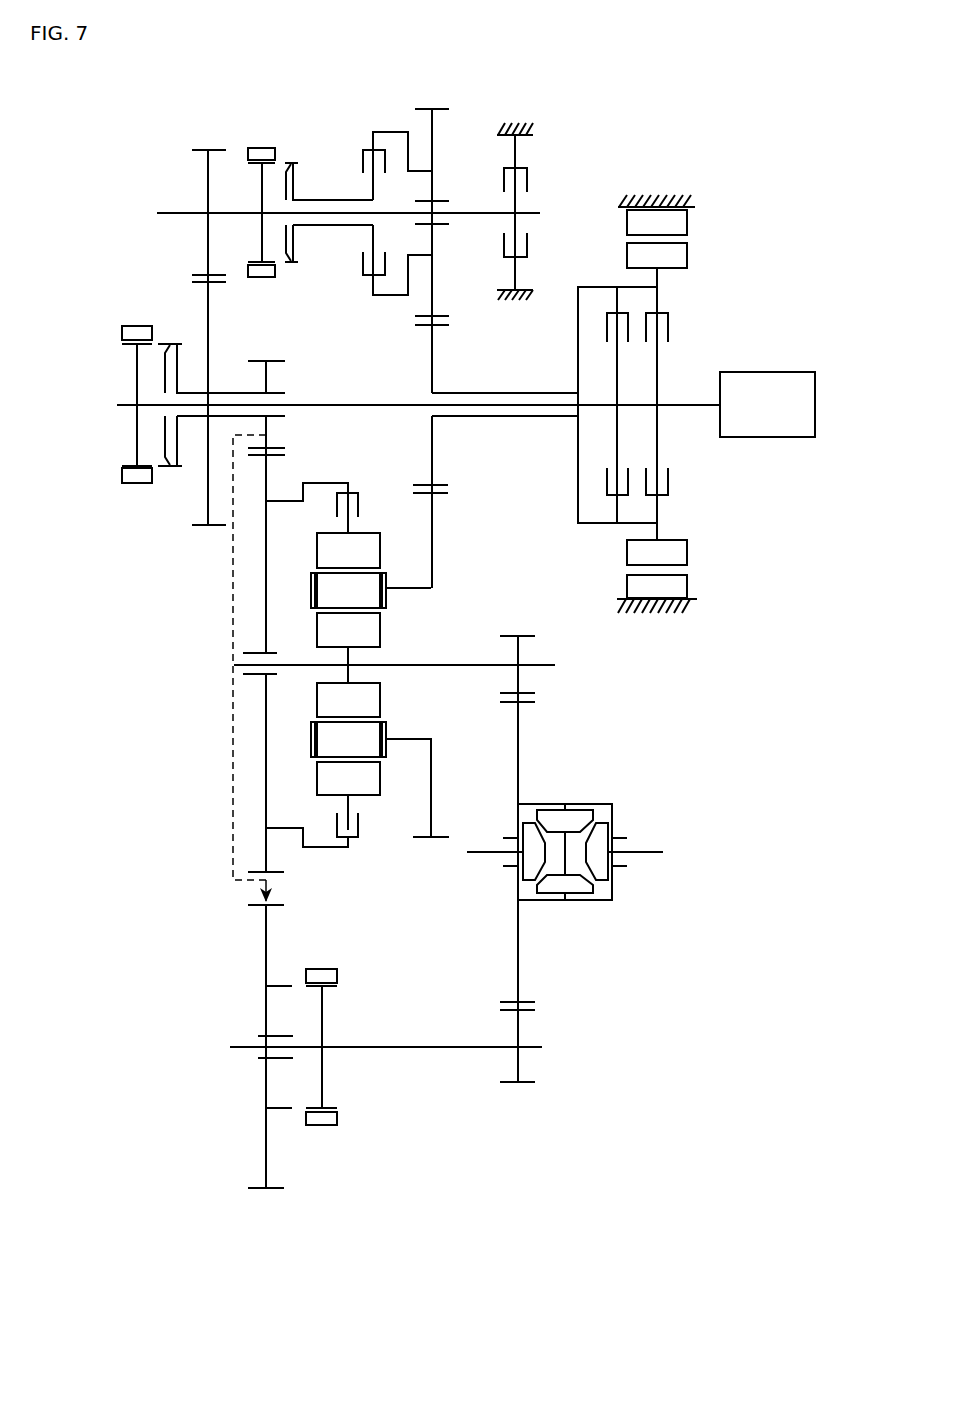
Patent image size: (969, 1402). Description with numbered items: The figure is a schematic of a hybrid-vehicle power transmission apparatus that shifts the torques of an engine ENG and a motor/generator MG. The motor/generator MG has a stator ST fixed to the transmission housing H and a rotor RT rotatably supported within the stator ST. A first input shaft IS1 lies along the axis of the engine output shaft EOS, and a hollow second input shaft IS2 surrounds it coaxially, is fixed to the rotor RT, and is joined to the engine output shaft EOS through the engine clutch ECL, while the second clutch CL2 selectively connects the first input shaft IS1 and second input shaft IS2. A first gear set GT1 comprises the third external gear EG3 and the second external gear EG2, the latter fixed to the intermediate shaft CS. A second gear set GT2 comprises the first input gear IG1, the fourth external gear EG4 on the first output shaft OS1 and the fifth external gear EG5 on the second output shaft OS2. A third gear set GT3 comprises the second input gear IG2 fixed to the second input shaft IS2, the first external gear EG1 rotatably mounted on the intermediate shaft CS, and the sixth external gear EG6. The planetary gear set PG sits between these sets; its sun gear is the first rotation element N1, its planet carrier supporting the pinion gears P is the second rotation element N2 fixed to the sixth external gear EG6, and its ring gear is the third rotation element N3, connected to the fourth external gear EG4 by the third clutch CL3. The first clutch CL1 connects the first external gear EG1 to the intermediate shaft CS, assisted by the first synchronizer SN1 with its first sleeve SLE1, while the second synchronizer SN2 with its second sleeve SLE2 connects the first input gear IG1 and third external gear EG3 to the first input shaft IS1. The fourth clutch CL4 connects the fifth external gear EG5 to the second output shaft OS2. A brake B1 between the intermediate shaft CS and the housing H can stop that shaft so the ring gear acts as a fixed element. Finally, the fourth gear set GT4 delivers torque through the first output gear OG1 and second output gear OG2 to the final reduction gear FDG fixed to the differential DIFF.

The first gear set GT1 is at (205, 144).
The second gear set GT2 is at (262, 1195).
The third gear set GT3 is at (438, 101).
The fourth gear set GT4 is at (518, 1092).
The first sleeve SLE1 is at (255, 148).
The second sleeve SLE2 is at (145, 327).
The first synchronizer SN1 is at (273, 134).
The second synchronizer SN2 is at (124, 310).
The first clutch CL1 is at (364, 141).
The second clutch CL2 is at (607, 310).
The third clutch CL3 is at (362, 490).
The fourth clutch CL4 is at (347, 970).
The transmission housing H is at (512, 122).
The brake B1 is at (540, 170).
The first external gear EG1 is at (432, 155).
The second external gear EG2 is at (208, 182).
The third external gear EG3 is at (208, 321).
The fourth external gear EG4 is at (266, 548).
The fifth external gear EG5 is at (266, 939).
The sixth external gear EG6 is at (432, 534).
The intermediate shaft CS is at (470, 214).
The first input gear IG1 is at (267, 382).
The second input gear IG2 is at (432, 358).
The first input shaft IS1 is at (537, 406).
The second input shaft IS2 is at (488, 417).
The stator ST is at (657, 222).
The rotor RT is at (657, 255).
The motor/generator MG is at (686, 239).
The engine clutch ECL is at (680, 332).
The engine ENG is at (767, 404).
The engine output shaft EOS is at (690, 407).
The planetary gear set PG is at (322, 690).
The first rotation element N1 is at (348, 630).
The second rotation element N2 is at (388, 600).
The third rotation element N3 is at (348, 550).
The pinion gear P is at (348, 590).
The first output gear OG1 is at (518, 647).
The second output gear OG2 is at (518, 1027).
The first output shaft OS1 is at (545, 666).
The second output shaft OS2 is at (540, 1048).
The final reduction gear FDG is at (518, 771).
The differential DIFF is at (629, 815).